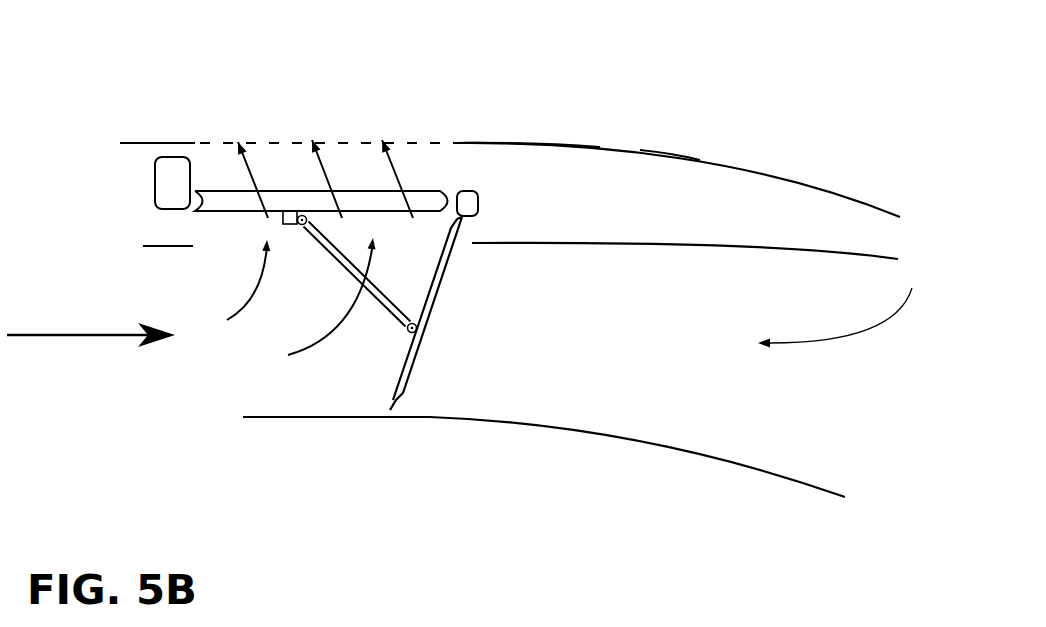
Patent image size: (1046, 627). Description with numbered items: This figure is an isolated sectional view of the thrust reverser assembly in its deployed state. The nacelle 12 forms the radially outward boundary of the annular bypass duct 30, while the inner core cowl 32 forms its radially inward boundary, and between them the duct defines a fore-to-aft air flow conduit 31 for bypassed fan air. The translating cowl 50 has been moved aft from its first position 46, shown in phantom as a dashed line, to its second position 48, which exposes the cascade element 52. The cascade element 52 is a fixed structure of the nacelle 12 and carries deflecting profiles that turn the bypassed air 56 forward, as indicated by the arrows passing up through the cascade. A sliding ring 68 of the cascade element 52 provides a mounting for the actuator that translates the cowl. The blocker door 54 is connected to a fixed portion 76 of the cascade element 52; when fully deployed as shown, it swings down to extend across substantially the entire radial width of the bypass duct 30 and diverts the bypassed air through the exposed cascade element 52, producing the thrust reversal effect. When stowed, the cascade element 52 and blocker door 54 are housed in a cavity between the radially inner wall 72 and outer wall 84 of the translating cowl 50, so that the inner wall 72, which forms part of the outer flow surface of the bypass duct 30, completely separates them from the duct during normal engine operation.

The nacelle 12 is at (128, 125).
The first position 46 is at (225, 143).
The second position 48 is at (458, 143).
The translating cowl 50 is at (745, 172).
The outer wall 84 is at (652, 158).
The cascade element 52 is at (430, 202).
The fixed portion 76 is at (478, 200).
The sliding ring 68 is at (290, 211).
The blocker door 54 is at (408, 377).
The bypassed air 56 is at (403, 187).
The inner wall 72 is at (585, 248).
The inner core cowl 32 is at (485, 420).
The bypass duct 30 is at (257, 369).
The fore-to-aft air flow conduit 31 is at (842, 304).